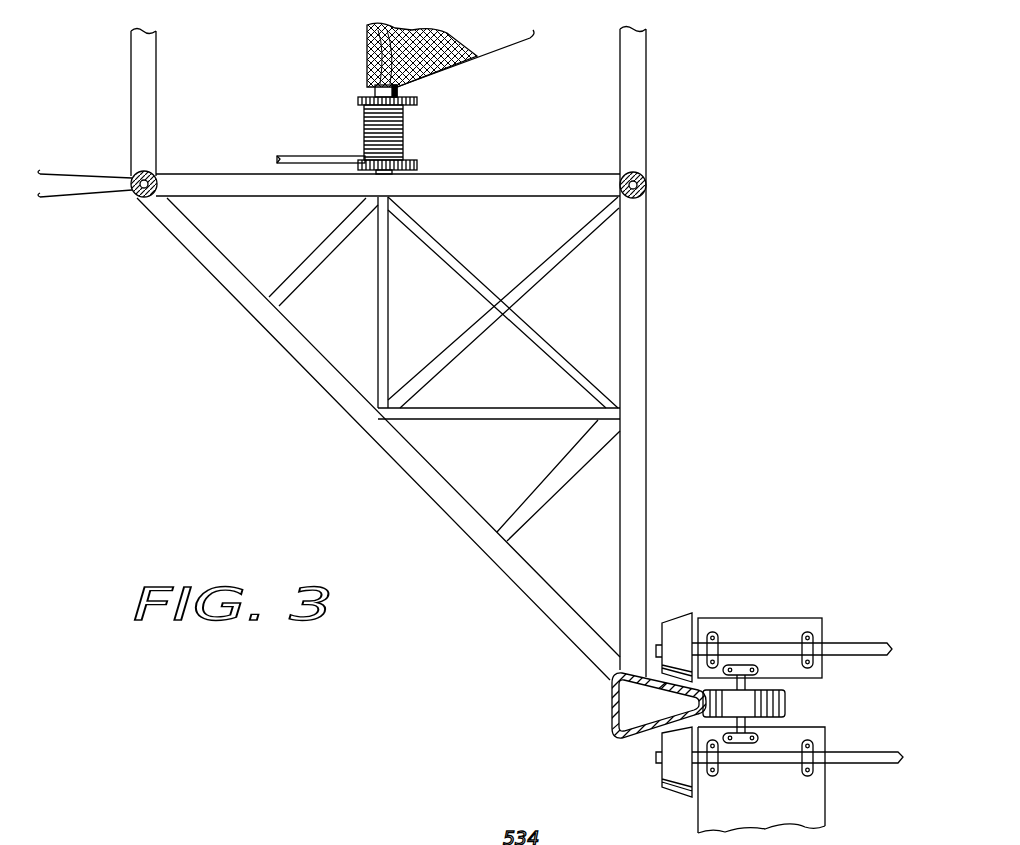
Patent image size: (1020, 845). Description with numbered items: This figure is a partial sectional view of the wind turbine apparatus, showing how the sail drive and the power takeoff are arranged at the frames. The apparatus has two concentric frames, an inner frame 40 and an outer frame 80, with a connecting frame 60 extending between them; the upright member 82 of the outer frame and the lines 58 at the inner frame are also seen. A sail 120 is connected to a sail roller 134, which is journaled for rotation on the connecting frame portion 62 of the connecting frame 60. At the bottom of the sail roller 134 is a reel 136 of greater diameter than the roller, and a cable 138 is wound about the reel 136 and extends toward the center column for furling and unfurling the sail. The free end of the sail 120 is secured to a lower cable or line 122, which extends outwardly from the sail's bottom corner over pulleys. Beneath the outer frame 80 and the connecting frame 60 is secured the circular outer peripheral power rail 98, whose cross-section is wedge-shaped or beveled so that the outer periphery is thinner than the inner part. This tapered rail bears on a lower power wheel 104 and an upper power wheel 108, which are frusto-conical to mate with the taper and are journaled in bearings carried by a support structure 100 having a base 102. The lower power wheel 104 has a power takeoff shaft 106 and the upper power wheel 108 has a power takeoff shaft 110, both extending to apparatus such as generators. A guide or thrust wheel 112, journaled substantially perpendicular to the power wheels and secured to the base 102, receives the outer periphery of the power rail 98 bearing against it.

The inner frame 40 is at (124, 101).
The guy lines 58 is at (96, 190).
The connecting frame 60 is at (364, 447).
The connecting frame portion 62 is at (498, 182).
The outer frame 80 is at (667, 352).
The right upright post 82 is at (640, 125).
The outer peripheral power rail 98 is at (613, 718).
The support structure 100 is at (812, 786).
The base 102 is at (800, 806).
The lower power wheel 104 is at (660, 770).
The power takeoff shaft 106 is at (856, 752).
The upper power wheel 108 is at (680, 614).
The power takeoff shaft 110 is at (847, 642).
The guide or thrust wheel 112 is at (786, 703).
The sail 120 is at (476, 40).
The lower cable or line 122 is at (524, 48).
The sail roller 134 is at (375, 92).
The reel 136 is at (416, 100).
The cable 138 is at (312, 156).